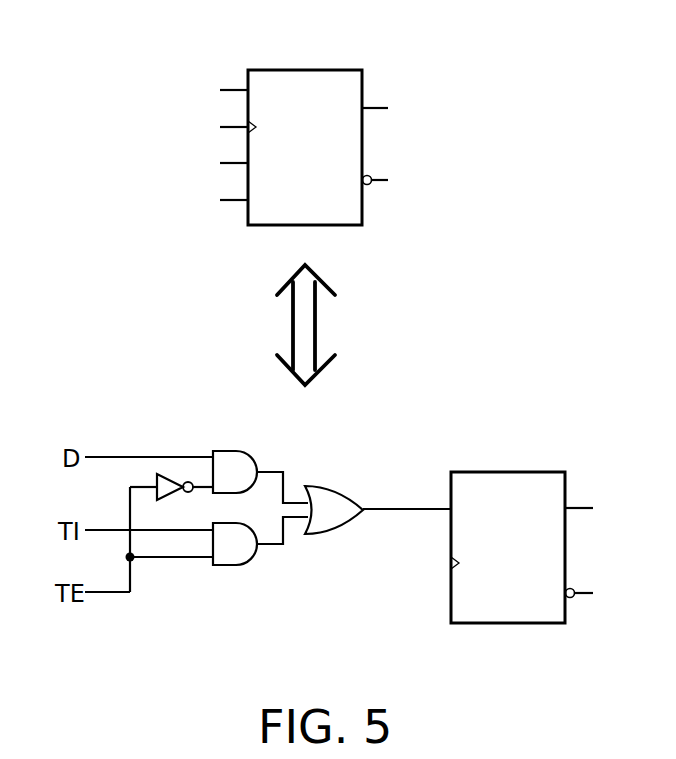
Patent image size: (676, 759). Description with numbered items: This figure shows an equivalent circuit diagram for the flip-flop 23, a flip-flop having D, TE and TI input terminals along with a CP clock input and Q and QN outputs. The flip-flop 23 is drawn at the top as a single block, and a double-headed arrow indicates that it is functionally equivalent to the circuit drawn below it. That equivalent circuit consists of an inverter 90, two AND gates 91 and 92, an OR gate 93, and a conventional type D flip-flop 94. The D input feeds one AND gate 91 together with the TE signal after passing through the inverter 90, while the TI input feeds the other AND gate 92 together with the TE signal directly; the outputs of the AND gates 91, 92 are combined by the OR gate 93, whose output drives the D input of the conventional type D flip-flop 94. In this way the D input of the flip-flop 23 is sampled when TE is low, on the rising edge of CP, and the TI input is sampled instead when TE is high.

The flip-flop 23 is at (309, 62).
The inverter 90 is at (176, 493).
The AND gate 91 is at (250, 452).
The AND gate 92 is at (248, 566).
The OR gate 93 is at (331, 486).
The conventional type D flip-flop 94 is at (507, 472).